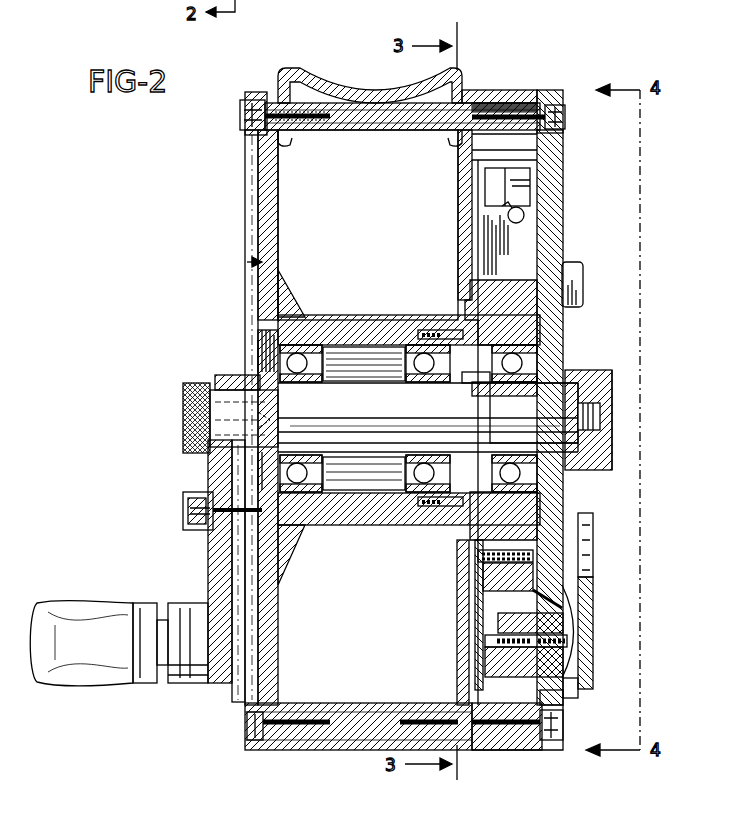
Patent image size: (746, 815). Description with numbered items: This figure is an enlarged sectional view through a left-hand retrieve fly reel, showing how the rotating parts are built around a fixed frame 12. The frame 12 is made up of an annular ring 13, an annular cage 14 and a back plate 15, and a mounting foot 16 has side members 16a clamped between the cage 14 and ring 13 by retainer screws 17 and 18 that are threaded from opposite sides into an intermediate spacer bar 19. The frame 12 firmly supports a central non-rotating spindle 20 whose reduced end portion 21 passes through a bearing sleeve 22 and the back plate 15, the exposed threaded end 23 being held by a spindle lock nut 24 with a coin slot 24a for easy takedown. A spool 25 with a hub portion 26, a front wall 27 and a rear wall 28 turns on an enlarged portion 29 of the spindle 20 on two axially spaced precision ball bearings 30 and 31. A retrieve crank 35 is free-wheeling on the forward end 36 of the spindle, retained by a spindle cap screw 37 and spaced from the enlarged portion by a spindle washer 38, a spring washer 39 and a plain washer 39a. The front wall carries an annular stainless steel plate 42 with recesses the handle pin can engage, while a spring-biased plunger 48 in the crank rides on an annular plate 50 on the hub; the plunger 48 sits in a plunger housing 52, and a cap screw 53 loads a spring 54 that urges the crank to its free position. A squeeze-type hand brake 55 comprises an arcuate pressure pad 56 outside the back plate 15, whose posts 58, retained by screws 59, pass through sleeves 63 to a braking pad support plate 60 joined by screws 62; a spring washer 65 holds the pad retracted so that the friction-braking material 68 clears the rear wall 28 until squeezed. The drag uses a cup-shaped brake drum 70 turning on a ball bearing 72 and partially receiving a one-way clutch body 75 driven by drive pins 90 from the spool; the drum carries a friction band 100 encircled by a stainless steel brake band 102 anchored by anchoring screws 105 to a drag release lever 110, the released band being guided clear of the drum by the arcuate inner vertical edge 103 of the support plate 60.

The frame 12 is at (520, 88).
The annular ring 13 is at (258, 92).
The annular cage 14 is at (480, 90).
The back plate 15 is at (562, 172).
The mounting foot 16 is at (342, 76).
The side members 16a is at (283, 100).
The retainer screw 17 is at (562, 110).
The retainer screw 18 is at (248, 115).
The spacer bar 19 is at (370, 132).
The spindle 20 is at (374, 414).
The reduced end portion 21 is at (570, 402).
The bearing sleeve 22 is at (540, 474).
The threaded end 23 is at (600, 418).
The spindle lock nut 24 is at (600, 370).
The coin slot 24a is at (614, 450).
The spool 25 is at (246, 262).
The hub portion 26 is at (405, 320).
The front wall 27 is at (280, 228).
The rear wall 28 is at (458, 200).
The enlarged portion 29 is at (390, 492).
The ball bearing 30 is at (318, 320).
The ball bearing 31 is at (424, 465).
The retrieve crank 35 is at (206, 565).
The forward end 36 is at (240, 376).
The spindle cap screw 37 is at (183, 405).
The spindle washer 38 is at (260, 350).
The spring washer 39 is at (266, 356).
The plain washer 39a is at (258, 360).
The annular stainless steel plate 42 is at (250, 193).
The spring-biased plunger 48 is at (275, 545).
The annular plate 50 is at (310, 528).
The plunger housing 52 is at (266, 578).
The cap screw 53 is at (186, 512).
The spring 54 is at (232, 535).
The hand brake 55 is at (596, 608).
The pressure pad 56 is at (596, 668).
The posts 58 is at (558, 705).
The screws 59 is at (596, 640).
The braking pad support plate 60 is at (495, 740).
The screws 62 is at (456, 652).
The sleeves 63 is at (540, 740).
The spring washer 65 is at (582, 698).
The friction-braking material 68 is at (458, 605).
The brake drum 70 is at (535, 326).
The ball bearing 72 is at (535, 368).
The clutch body 75 is at (472, 374).
The drive pins 90 is at (438, 330).
The annular band of friction material 100 is at (515, 285).
The brake band 102 is at (545, 225).
The inner vertical edge 103 is at (582, 585).
The anchoring screws 105 is at (536, 208).
The drag release lever 110 is at (520, 190).